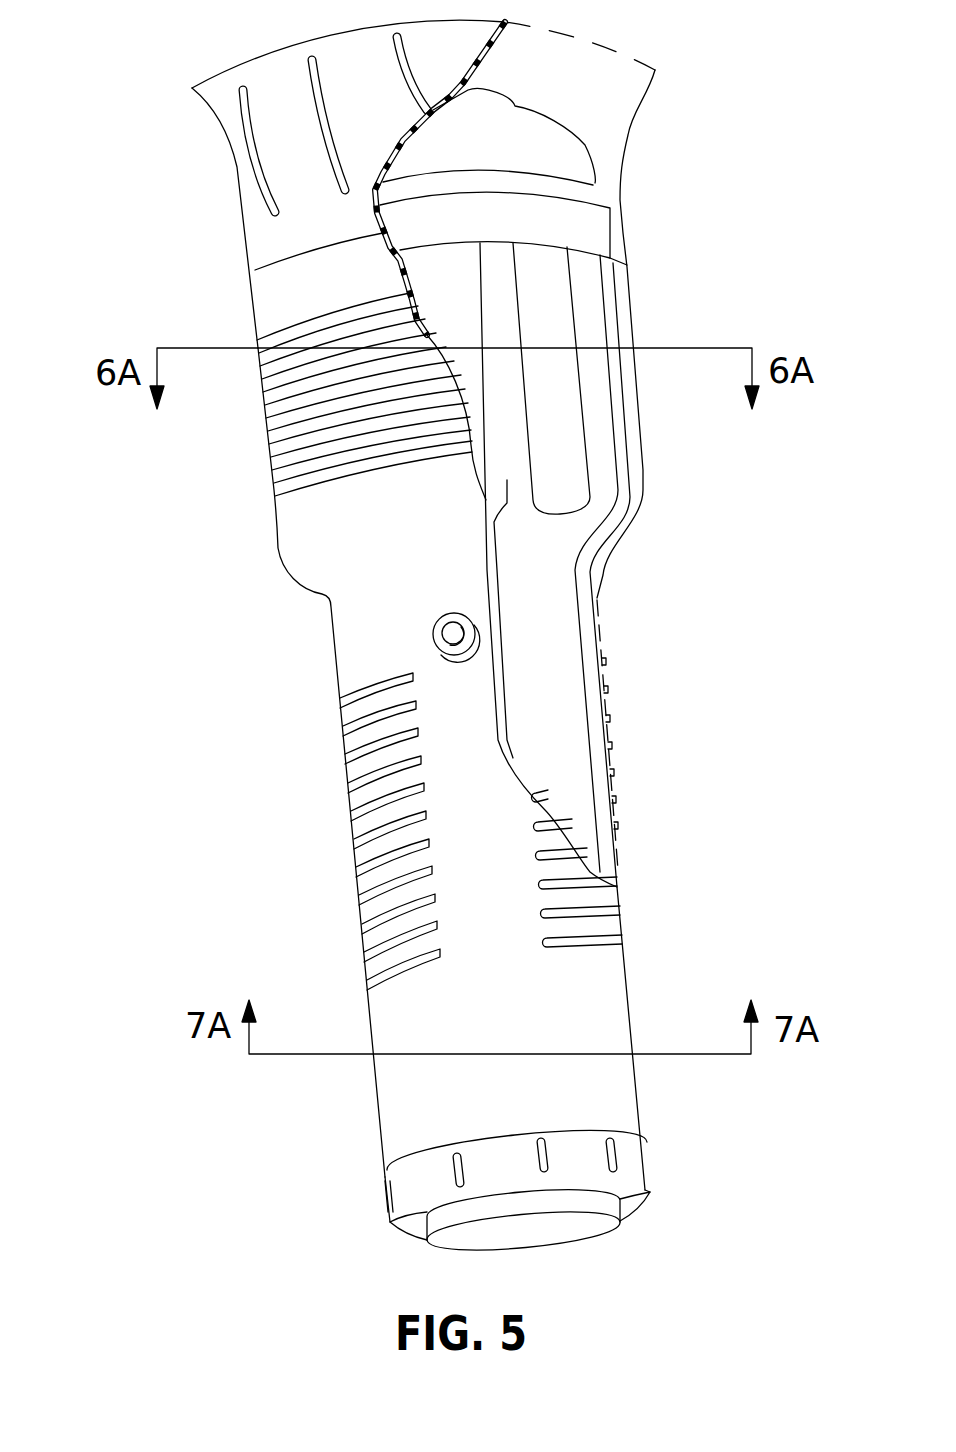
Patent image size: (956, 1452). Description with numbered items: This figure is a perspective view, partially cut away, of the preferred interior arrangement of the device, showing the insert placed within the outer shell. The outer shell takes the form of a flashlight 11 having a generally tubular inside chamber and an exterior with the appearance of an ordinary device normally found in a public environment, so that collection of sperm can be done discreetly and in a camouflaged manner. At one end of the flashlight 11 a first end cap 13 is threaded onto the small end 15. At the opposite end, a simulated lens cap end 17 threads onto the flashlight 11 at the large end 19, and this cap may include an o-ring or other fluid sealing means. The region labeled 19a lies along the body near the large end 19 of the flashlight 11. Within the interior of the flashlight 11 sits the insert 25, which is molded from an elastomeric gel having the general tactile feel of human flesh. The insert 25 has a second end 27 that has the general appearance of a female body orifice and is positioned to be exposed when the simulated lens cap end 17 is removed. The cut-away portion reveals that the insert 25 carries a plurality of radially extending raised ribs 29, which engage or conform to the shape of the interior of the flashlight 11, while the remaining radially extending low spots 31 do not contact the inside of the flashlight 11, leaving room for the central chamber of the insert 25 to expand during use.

The flashlight 11 is at (309, 585).
The first end cap 13 is at (407, 1188).
The small end 15 is at (403, 1117).
The simulated lens cap end 17 is at (242, 143).
The large end 19 is at (267, 287).
The lower grip portion 19a is at (612, 1015).
The insert 25 is at (562, 230).
The second end 27 is at (568, 157).
The raised ribs 29 is at (600, 402).
The low spots 31 is at (535, 555).